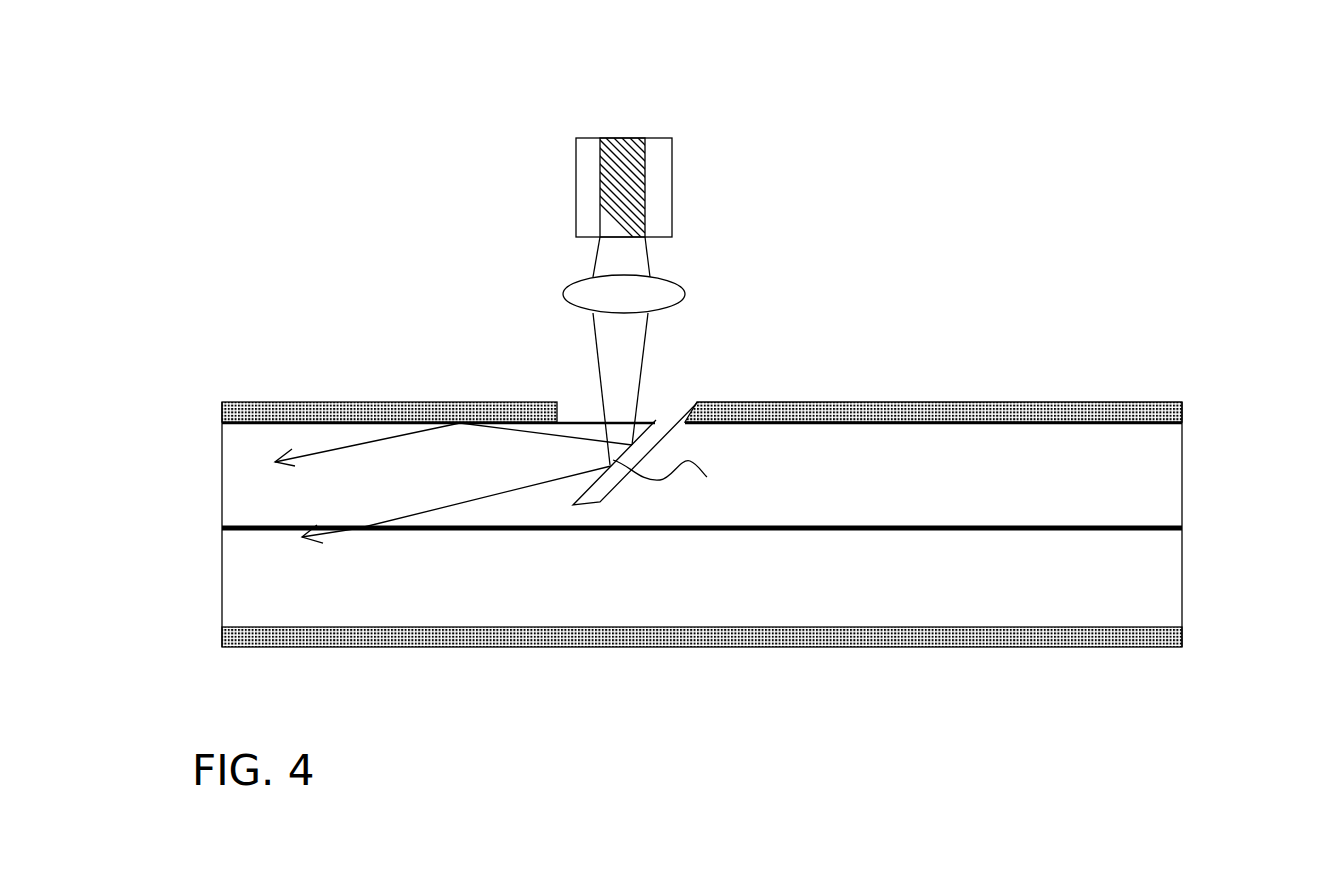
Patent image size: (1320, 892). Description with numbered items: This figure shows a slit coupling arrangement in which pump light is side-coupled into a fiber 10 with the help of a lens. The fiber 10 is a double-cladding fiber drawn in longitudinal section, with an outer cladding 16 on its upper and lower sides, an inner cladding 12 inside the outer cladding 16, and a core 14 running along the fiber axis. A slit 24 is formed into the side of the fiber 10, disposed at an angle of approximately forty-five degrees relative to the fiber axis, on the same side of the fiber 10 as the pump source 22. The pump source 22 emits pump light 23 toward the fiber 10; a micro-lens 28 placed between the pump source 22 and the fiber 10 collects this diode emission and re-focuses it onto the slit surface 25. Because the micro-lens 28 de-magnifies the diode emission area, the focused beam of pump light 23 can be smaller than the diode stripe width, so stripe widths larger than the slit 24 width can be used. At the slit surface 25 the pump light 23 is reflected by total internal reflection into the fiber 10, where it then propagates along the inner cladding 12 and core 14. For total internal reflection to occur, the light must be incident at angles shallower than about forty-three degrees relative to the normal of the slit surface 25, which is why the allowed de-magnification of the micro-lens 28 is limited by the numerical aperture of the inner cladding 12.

The fiber 10 is at (138, 320).
The inner cladding 12 is at (1160, 478).
The core 14 is at (1180, 523).
The outer cladding 16 is at (1033, 400).
The pump source 22 is at (668, 133).
The pump light 23 is at (643, 375).
The slit 24 is at (686, 388).
The slit surface 25 is at (683, 469).
The micro-lens 28 is at (673, 280).